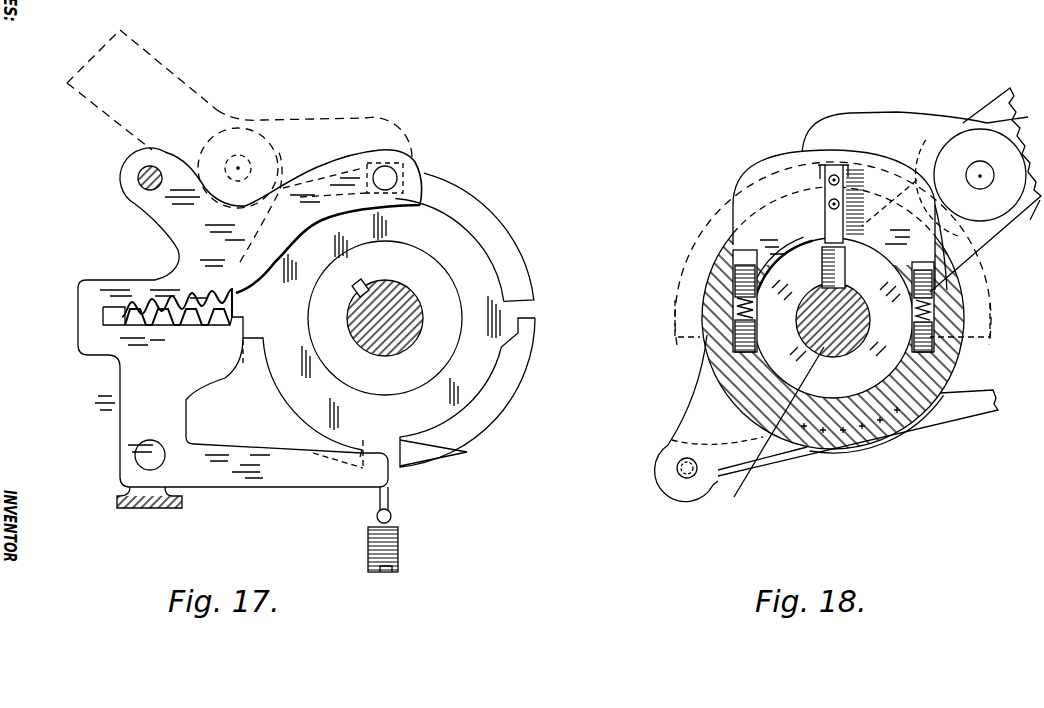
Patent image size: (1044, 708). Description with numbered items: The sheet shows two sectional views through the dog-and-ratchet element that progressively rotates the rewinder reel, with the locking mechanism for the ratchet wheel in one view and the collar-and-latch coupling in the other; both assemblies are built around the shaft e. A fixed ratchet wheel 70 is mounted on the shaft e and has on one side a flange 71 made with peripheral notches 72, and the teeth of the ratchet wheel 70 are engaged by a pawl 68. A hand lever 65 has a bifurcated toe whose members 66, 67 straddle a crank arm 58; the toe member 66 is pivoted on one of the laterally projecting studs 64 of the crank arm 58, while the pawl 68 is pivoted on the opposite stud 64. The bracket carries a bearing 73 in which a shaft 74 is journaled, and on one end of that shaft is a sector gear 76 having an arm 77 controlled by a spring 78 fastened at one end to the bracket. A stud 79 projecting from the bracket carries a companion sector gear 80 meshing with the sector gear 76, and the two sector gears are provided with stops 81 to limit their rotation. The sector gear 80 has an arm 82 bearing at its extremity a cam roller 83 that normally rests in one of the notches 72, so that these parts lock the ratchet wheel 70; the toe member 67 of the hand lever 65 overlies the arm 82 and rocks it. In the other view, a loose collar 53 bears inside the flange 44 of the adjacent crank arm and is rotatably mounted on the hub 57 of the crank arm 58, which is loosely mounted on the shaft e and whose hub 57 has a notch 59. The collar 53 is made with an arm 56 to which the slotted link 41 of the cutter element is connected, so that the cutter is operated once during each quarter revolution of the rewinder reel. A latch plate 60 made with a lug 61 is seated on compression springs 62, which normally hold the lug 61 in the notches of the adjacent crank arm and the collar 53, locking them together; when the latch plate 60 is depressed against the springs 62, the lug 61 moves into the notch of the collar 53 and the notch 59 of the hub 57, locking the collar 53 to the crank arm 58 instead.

In FIG. 18, the slotted link 41 is at (945, 415).
In FIG. 18, the flange 44 is at (675, 300).
In FIG. 18, the loose collar 53 is at (720, 350).
In FIG. 18, the arm 56 is at (698, 412).
In FIG. 18, the hub 57 is at (843, 383).
In FIG. 18, the crank arm 58 is at (992, 113).
In FIG. 18, the notch 59 is at (822, 272).
In FIG. 18, the latch plate 60 is at (767, 183).
In FIG. 18, the lug 61 is at (825, 212).
In FIG. 18, the compression springs 62 is at (733, 312).
In FIG. 17, the studs 64 is at (243, 153).
In FIG. 18, the studs 64 is at (982, 158).
In FIG. 17, the hand lever 65 is at (202, 92).
In FIG. 18, the hand lever 65 is at (1031, 221).
In FIG. 18, the toe-member 66 is at (877, 122).
In FIG. 17, the toe-member 67 is at (327, 119).
In FIG. 17, the pawl 68 is at (330, 143).
In FIG. 17, the fixed ratchet wheel 70 is at (469, 320).
In FIG. 17, the flange 71 is at (512, 255).
In FIG. 17, the peripheral notches 72 is at (524, 318).
In FIG. 17, the bearing 73 is at (148, 502).
In FIG. 17, the shaft 74 is at (143, 457).
In FIG. 17, the sector-gear 76 is at (130, 393).
In FIG. 17, the arm 77 is at (305, 478).
In FIG. 17, the spring 78 is at (400, 547).
In FIG. 17, the stud 79 is at (162, 173).
In FIG. 17, the companion sector-gear 80 is at (272, 233).
In FIG. 17, the stops 81 is at (102, 318).
In FIG. 17, the arm 82 is at (345, 165).
In FIG. 17, the cam-roller 83 is at (397, 170).
In FIG. 18, the shaft e is at (775, 434).